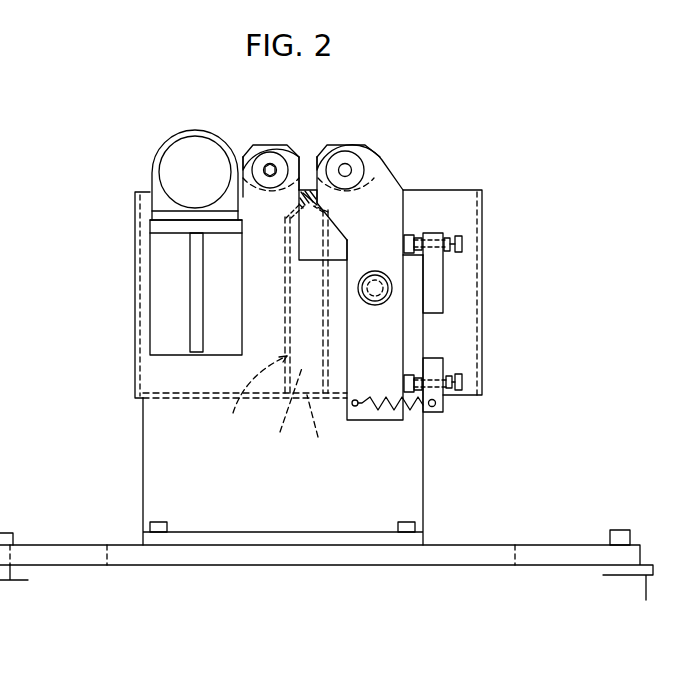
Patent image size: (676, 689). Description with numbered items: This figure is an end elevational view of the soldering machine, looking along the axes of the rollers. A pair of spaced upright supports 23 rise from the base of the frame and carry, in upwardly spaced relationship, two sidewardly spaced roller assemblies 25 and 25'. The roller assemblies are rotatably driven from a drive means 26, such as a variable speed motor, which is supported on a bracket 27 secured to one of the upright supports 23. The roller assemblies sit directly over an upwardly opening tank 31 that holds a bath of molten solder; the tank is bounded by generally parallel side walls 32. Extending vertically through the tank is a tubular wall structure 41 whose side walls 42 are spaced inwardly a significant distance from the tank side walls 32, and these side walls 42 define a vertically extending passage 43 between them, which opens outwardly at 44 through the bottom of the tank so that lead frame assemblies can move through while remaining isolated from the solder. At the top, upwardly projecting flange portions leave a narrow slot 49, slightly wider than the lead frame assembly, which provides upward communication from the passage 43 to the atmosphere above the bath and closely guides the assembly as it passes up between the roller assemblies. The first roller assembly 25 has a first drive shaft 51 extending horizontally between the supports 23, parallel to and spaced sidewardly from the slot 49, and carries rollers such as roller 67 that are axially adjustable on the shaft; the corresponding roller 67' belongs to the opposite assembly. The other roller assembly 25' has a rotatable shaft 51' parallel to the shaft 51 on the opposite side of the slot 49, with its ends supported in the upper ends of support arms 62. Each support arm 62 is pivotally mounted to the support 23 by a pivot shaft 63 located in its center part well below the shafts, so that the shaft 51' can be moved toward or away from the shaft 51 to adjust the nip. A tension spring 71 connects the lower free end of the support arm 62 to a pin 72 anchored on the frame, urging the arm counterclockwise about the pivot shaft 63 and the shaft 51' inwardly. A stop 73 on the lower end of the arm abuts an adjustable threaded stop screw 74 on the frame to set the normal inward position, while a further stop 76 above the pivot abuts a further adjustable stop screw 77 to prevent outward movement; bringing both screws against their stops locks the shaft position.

The upright support 23 is at (152, 449).
The roller assembly 25 is at (295, 168).
The roller assembly 25' is at (367, 129).
The drive means 26 is at (195, 140).
The bracket 27 is at (165, 263).
The tank 31 is at (129, 371).
The tank side wall 32 is at (135, 210).
The tubular wall structure 41 is at (252, 399).
The side wall 42 is at (288, 318).
The passage 43 is at (282, 415).
The bottom opening 44 is at (322, 430).
The slot 49 is at (298, 205).
The first drive shaft 51 is at (259, 143).
The rotatable shaft 51' is at (379, 156).
The support arm 62 is at (397, 345).
The pivot shaft 63 is at (392, 285).
The roller 67 is at (271, 143).
The pulley housing 67' is at (343, 147).
The tension spring 71 is at (413, 407).
The pin 72 is at (434, 406).
The stop 73 is at (404, 380).
The stop screw 74 is at (462, 383).
The stop 76 is at (404, 240).
The stop screw 77 is at (462, 243).